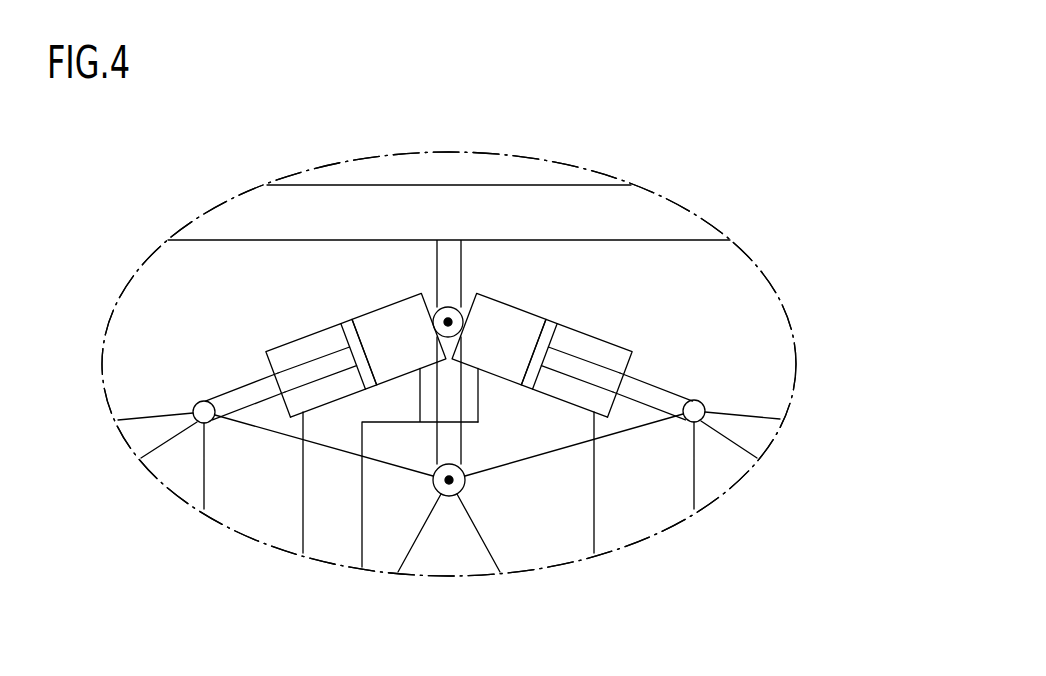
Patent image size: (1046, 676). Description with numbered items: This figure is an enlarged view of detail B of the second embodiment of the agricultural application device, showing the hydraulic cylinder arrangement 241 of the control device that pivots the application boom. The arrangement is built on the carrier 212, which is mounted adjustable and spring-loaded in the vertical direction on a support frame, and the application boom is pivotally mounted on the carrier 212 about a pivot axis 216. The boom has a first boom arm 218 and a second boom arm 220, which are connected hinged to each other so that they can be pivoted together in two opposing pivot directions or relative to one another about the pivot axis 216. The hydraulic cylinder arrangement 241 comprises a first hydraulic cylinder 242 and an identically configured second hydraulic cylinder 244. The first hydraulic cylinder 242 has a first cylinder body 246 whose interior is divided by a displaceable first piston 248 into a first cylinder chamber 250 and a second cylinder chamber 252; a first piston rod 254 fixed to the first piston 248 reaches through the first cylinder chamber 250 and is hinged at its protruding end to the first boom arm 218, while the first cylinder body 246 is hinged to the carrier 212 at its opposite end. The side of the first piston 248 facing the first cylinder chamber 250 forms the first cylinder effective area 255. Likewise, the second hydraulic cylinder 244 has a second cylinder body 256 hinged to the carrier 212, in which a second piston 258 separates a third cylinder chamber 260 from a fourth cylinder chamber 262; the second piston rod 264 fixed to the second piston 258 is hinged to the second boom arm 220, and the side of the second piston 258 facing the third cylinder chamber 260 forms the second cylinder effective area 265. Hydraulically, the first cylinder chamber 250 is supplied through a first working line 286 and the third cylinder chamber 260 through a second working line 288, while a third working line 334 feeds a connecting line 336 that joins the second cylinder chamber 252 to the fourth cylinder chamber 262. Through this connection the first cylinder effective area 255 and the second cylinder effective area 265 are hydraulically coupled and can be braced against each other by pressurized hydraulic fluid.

The carrier 212 is at (445, 213).
The pivot axis 216 is at (449, 480).
The first boom arm 218 is at (747, 418).
The second boom arm 220 is at (150, 418).
The hydraulic cylinder arrangement 241 is at (636, 166).
The first hydraulic cylinder 242 is at (538, 284).
The second hydraulic cylinder 244 is at (366, 282).
The first cylinder body 246 is at (573, 357).
The first piston 248 is at (550, 332).
The first cylinder chamber 250 is at (588, 350).
The second cylinder chamber 252 is at (517, 320).
The first piston rod 254 is at (660, 397).
The first cylinder effective area 255 is at (556, 389).
The second cylinder body 256 is at (325, 355).
The second piston 258 is at (348, 332).
The third cylinder chamber 260 is at (308, 349).
The fourth cylinder chamber 262 is at (400, 310).
The second piston rod 264 is at (238, 397).
The second cylinder effective area 265 is at (350, 386).
The first working line 286 is at (595, 504).
The second working line 288 is at (302, 502).
The third working line 334 is at (362, 532).
The connecting line 336 is at (480, 398).
The detail B is at (782, 303).